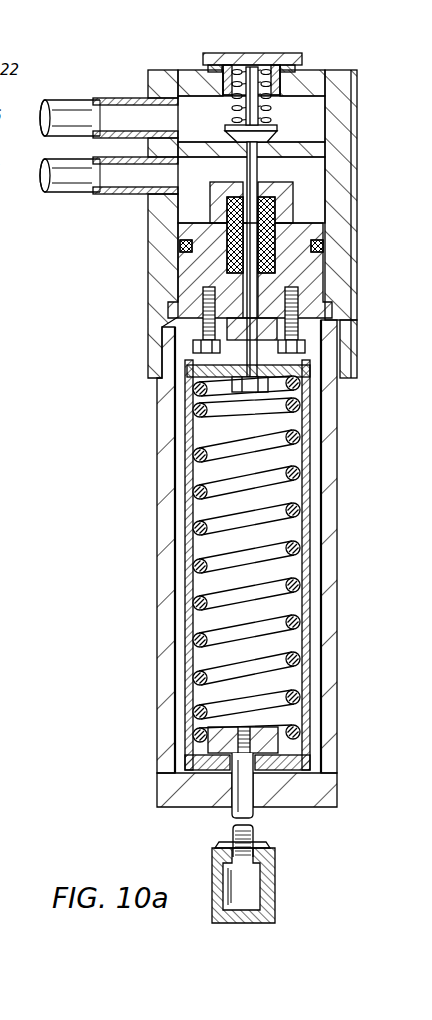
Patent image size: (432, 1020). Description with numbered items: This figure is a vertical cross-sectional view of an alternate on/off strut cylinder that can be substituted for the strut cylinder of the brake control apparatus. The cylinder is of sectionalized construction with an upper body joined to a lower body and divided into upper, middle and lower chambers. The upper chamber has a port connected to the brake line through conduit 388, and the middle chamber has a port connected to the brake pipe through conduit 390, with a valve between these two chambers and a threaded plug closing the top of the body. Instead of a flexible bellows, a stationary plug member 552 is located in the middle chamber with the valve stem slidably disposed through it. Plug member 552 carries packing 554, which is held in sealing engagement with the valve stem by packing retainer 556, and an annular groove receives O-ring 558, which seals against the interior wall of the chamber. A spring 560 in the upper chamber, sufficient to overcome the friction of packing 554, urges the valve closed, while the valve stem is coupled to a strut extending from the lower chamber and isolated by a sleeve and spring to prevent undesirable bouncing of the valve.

The conduit 388 is at (72, 108).
The conduit 390 is at (65, 182).
The plug member 552 is at (303, 247).
The packing 554 is at (300, 237).
The packing retainer 556 is at (305, 328).
The O-ring 558 is at (308, 252).
The spring 560 is at (262, 53).